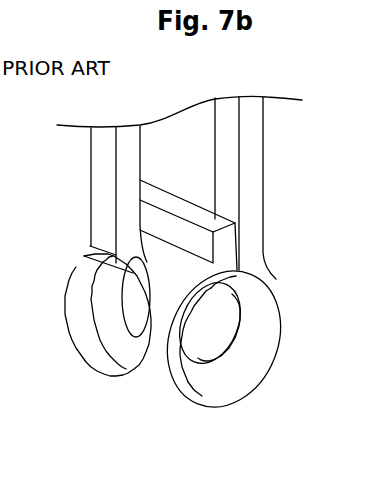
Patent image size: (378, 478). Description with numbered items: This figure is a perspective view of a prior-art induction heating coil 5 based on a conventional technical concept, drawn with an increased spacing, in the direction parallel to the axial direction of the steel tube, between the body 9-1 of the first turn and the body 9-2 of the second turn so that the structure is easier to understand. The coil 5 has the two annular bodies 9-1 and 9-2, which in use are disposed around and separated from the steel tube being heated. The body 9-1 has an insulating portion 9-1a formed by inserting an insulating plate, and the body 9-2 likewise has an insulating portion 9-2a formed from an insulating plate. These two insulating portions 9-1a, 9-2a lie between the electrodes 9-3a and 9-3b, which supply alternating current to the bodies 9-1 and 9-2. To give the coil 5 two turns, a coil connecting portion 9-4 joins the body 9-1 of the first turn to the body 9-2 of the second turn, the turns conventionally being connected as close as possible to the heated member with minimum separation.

The induction heating coil 5 is at (176, 270).
The body of the first turn 9-1 is at (213, 403).
The insulating portion 9-1a is at (232, 284).
The body of the second turn 9-2 is at (120, 371).
The insulating portion 9-2a is at (90, 254).
The electrode 9-3a is at (263, 161).
The electrode 9-3b is at (92, 177).
The coil connecting portion 9-4 is at (180, 205).